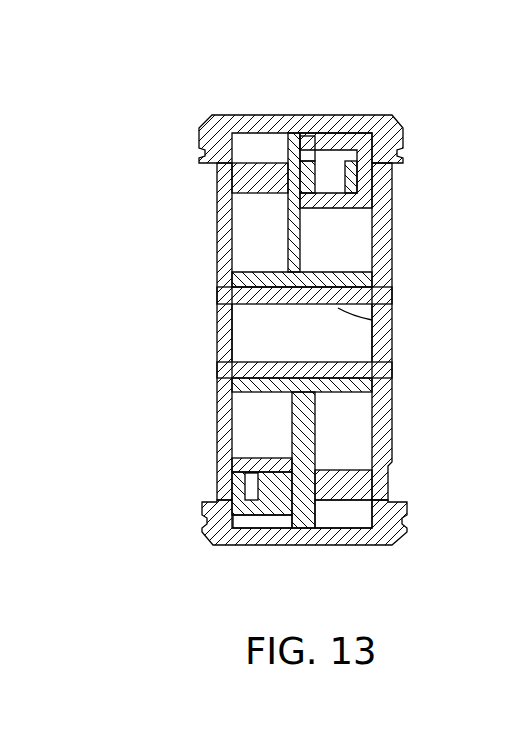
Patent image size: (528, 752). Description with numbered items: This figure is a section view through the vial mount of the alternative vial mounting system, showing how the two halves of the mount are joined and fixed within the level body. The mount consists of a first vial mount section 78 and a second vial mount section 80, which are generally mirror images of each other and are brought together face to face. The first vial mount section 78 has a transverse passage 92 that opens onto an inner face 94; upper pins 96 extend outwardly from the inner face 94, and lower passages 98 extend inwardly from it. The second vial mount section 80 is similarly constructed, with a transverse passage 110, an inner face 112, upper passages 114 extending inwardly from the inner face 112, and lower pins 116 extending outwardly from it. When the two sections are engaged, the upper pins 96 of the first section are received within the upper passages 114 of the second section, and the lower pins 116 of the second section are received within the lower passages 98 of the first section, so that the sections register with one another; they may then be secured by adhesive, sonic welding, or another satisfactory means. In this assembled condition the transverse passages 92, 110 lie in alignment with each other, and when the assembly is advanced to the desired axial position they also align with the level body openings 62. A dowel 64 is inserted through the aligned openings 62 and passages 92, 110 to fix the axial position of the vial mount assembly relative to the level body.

The level body openings 62 is at (388, 300).
The dowel 64 is at (392, 297).
The first vial mount section 78 is at (213, 383).
The second vial mount section 80 is at (392, 383).
The transverse passage 92 is at (233, 310).
The inner face 94 is at (217, 216).
The upper pins 96 is at (327, 152).
The lower passages 98 is at (245, 483).
The transverse passage 110 is at (393, 318).
The inner face 112 is at (392, 410).
The upper passages 114 is at (353, 191).
The lower pins 116 is at (257, 473).